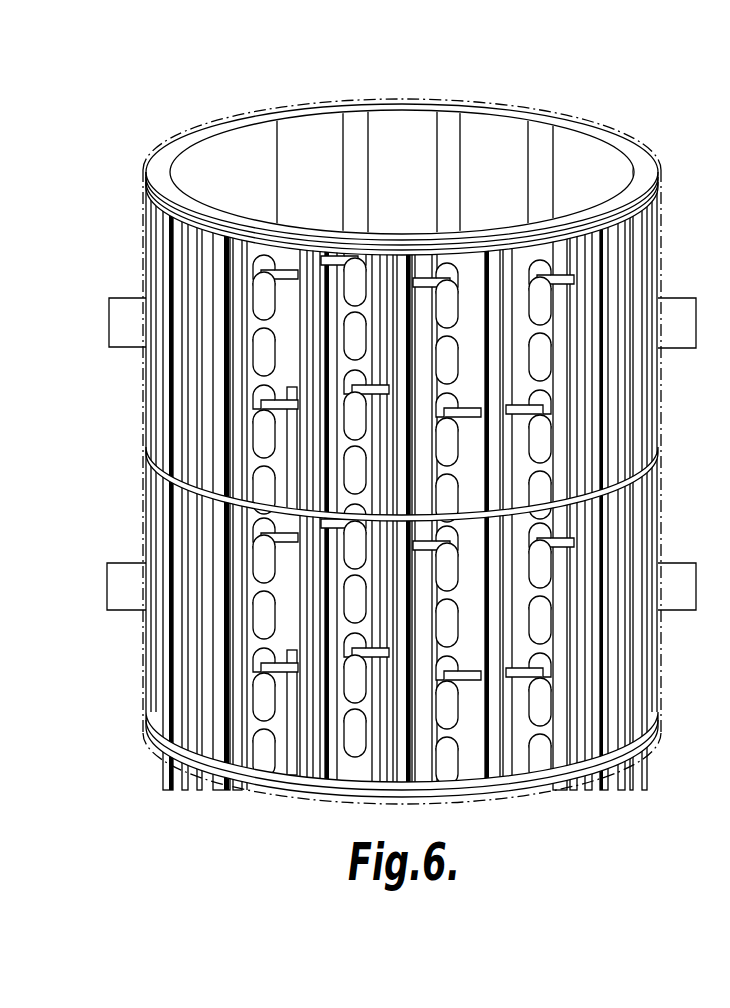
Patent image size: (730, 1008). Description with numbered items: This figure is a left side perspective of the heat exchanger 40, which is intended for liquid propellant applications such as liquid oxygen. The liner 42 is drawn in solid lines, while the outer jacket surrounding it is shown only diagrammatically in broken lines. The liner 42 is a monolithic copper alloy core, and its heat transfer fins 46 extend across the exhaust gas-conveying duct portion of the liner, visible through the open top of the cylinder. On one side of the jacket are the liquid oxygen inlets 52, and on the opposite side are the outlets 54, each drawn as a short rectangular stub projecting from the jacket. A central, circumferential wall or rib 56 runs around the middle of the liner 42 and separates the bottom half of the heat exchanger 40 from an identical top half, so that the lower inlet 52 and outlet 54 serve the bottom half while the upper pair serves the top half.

The heat exchanger 40 is at (139, 155).
The liner 42 is at (218, 132).
The heat transfer fins 46 is at (348, 152).
The liquid oxygen inlets 52 is at (683, 299).
The outlets 54 is at (129, 299).
The central circumferential wall or rib 56 is at (648, 464).